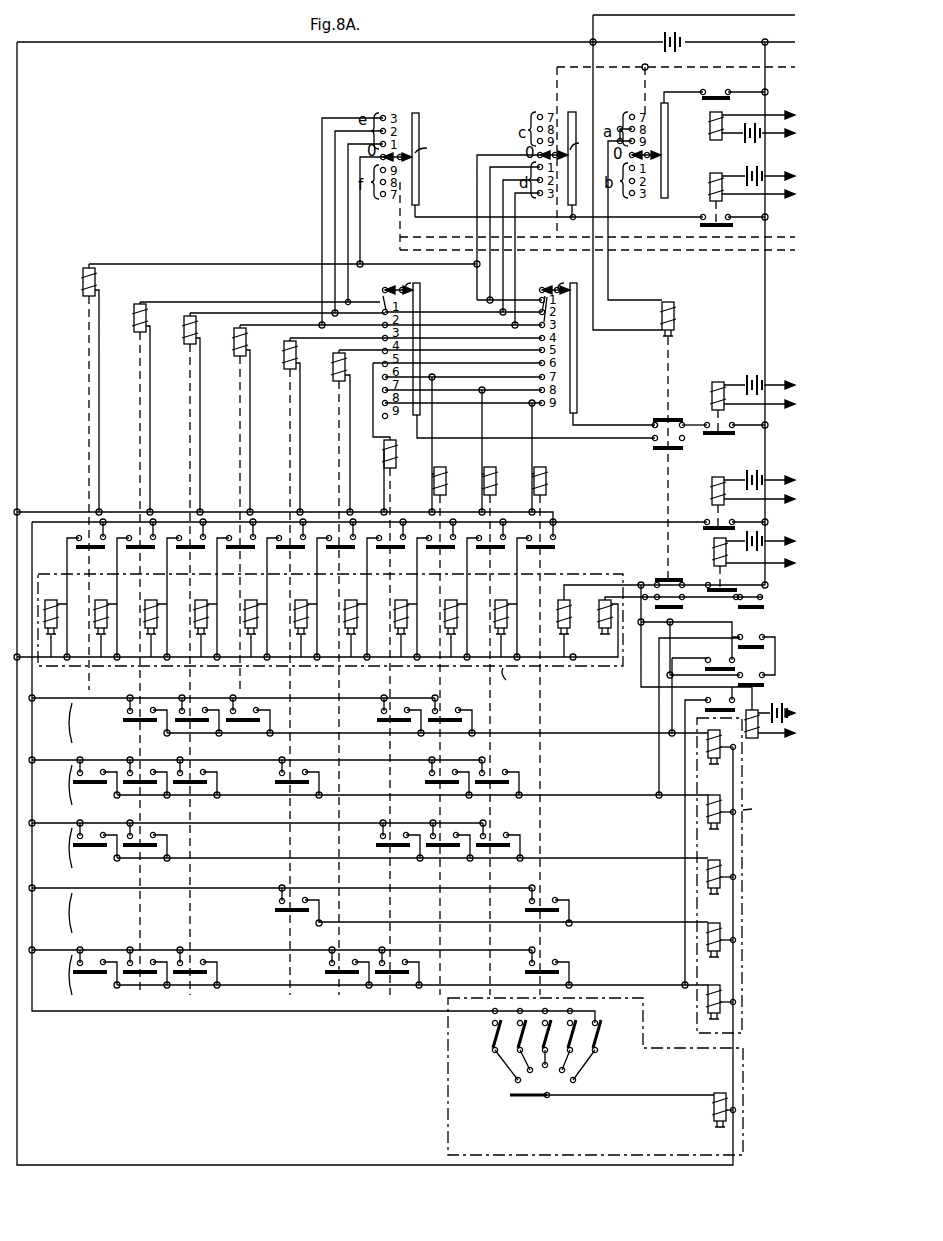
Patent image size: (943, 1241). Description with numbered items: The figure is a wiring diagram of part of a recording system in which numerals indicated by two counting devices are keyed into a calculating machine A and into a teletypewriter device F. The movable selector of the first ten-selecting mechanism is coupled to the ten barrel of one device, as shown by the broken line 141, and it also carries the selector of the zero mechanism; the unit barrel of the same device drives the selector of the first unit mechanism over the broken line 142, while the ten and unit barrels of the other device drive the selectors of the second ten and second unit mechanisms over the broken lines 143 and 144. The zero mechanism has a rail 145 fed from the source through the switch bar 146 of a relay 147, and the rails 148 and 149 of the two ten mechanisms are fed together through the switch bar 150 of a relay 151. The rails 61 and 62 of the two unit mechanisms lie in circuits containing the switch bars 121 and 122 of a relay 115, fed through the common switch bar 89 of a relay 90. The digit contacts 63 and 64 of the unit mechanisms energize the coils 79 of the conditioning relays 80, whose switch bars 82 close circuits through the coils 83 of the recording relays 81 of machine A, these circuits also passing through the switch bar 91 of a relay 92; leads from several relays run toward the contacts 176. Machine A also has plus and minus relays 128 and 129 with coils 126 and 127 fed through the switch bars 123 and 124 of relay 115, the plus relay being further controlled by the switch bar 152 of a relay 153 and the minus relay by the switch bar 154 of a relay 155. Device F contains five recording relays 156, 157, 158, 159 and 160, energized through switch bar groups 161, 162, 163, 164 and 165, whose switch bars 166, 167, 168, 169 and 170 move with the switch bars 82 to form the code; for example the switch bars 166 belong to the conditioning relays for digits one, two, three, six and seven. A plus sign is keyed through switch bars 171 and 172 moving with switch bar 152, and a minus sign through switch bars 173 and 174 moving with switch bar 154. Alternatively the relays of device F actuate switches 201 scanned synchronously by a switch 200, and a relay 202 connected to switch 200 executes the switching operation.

The rail 61 is at (578, 392).
The rail 62 is at (425, 410).
The contacts 63 is at (543, 292).
The contacts 64 is at (382, 293).
The coils 79 is at (542, 469).
The conditioning relays 80 is at (571, 499).
The recording relays 81 is at (536, 626).
The switch bars 82 is at (310, 589).
The coils 83 is at (498, 607).
The common switch bar 89 is at (722, 436).
The relay 90 is at (700, 402).
The switch bar 91 is at (707, 526).
The relay 92 is at (700, 497).
The relay 115 is at (645, 328).
The switch bar 121 is at (656, 419).
The switch bar 122 is at (658, 452).
The switch bar 123 is at (667, 582).
The switch bar 124 is at (684, 606).
The coil 126 is at (593, 618).
The coil 127 is at (605, 603).
The plus relay 128 is at (566, 668).
The minus relay 129 is at (608, 668).
The broken line 141 is at (712, 68).
The broken line 142 is at (686, 253).
The broken line 143 is at (430, 240).
The broken line 144 is at (405, 276).
The rail 145 is at (668, 140).
The switch bar 146 is at (706, 97).
The relay 147 is at (748, 159).
The rail 148 is at (569, 204).
The rail 149 is at (419, 165).
The switch bar 150 is at (700, 227).
The relay 151 is at (702, 193).
The switch bar 152 is at (728, 588).
The relay 153 is at (700, 562).
The switch bar 154 is at (765, 603).
The relay 155 is at (792, 760).
The recording relay 156 is at (727, 789).
The recording relay 157 is at (727, 852).
The recording relay 158 is at (727, 914).
The recording relay 159 is at (727, 977).
The recording relay 160 is at (735, 1017).
The switch bar group 161 is at (368, 725).
The switch bar group 162 is at (368, 788).
The switch bar group 163 is at (368, 852).
The switch bar group 164 is at (368, 909).
The switch bar group 165 is at (368, 979).
The switch bars 166 is at (437, 722).
The switch bars 167 is at (458, 784).
The switch bars 168 is at (485, 847).
The switch bars 169 is at (528, 911).
The switch bars 170 is at (528, 972).
The switch bar 171 is at (714, 664).
The switch bar 172 is at (712, 706).
The switch bar 173 is at (766, 684).
The switch bar 174 is at (766, 647).
The contacts 176 is at (811, 454).
The switch 200 is at (512, 1092).
The switches 201 is at (599, 1038).
The relay 202 is at (725, 1146).